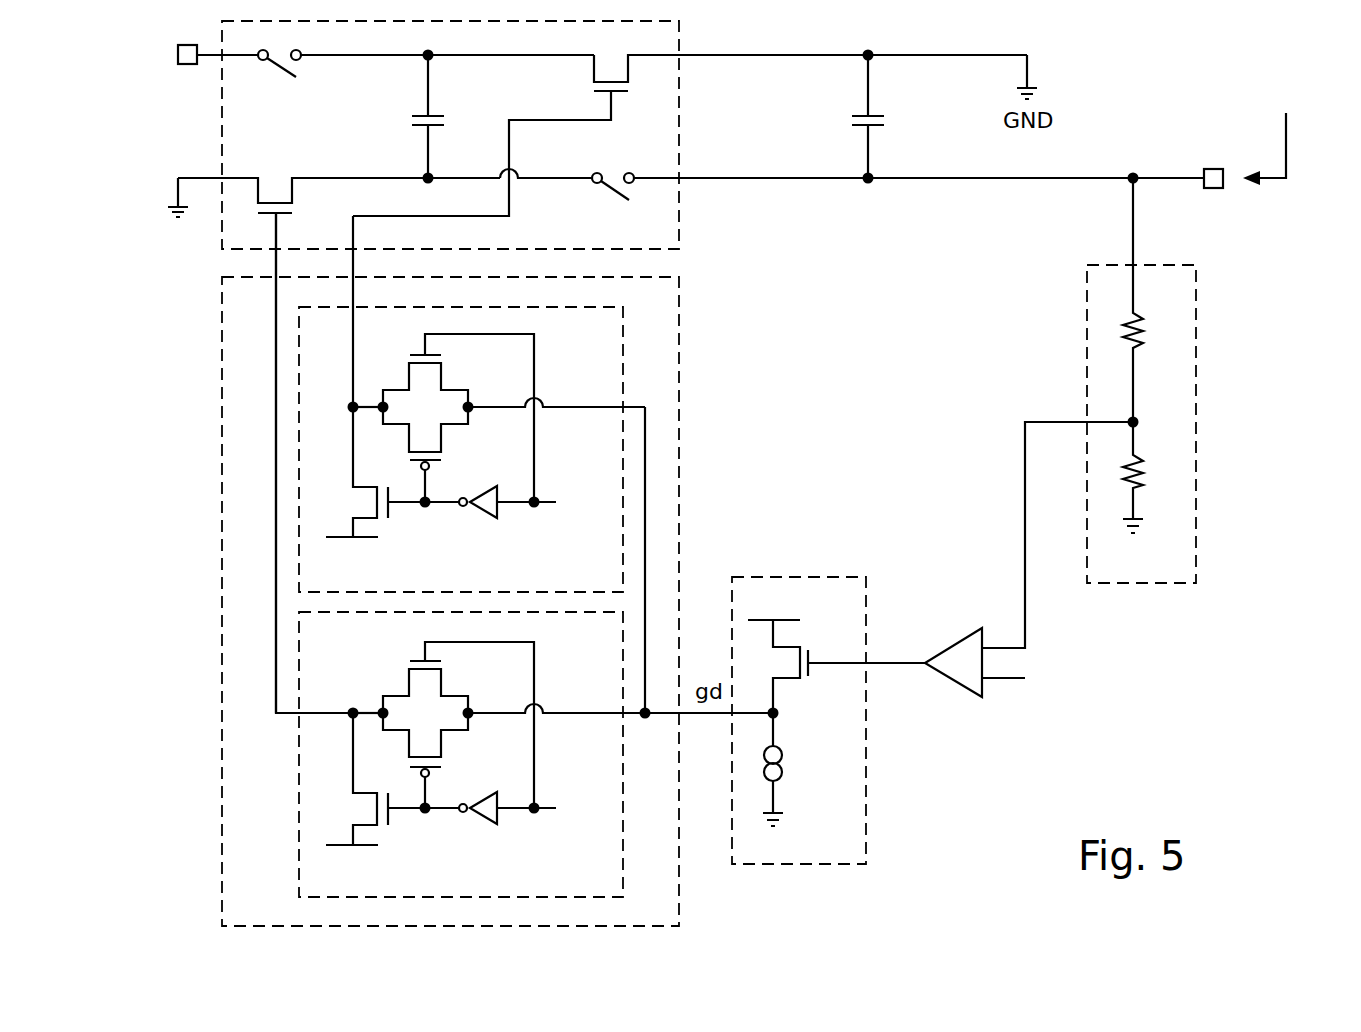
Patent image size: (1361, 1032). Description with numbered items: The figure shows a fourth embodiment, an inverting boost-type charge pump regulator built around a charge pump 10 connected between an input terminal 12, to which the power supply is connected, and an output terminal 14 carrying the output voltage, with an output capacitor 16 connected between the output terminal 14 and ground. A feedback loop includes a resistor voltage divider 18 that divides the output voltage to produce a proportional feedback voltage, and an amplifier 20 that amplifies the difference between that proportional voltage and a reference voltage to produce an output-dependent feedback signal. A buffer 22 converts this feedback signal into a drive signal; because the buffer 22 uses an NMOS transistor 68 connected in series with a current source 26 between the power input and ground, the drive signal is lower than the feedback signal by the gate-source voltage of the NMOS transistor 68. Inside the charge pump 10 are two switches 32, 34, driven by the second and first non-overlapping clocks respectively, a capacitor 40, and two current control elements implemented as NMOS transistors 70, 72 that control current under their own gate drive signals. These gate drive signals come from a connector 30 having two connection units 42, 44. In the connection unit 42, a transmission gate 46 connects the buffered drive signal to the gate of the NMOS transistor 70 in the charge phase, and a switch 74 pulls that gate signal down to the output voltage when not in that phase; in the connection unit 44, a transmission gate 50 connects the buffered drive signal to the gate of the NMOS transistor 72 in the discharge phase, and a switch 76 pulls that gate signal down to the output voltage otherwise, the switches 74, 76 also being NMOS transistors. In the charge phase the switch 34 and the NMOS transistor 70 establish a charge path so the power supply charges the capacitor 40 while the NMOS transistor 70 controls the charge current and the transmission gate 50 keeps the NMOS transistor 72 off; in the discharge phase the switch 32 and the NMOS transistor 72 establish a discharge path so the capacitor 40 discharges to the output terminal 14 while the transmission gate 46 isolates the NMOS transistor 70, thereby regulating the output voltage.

The charge pump 10 is at (680, 120).
The input terminal 12 is at (258, 60).
The output terminal 14 is at (1212, 168).
The output capacitor 16 is at (900, 126).
The resistor voltage divider 18 is at (1197, 423).
The amplifier 20 is at (952, 645).
The buffer 22 is at (800, 577).
The current source 26 is at (795, 771).
The connector 30 is at (680, 460).
The switch 32 is at (608, 192).
The switch 34 is at (276, 68).
The capacitor 40 is at (400, 107).
The connection unit 42 is at (298, 772).
The connection unit 44 is at (298, 440).
The transmission gate 46 is at (386, 679).
The transmission gate 50 is at (472, 370).
The NMOS transistor 68 is at (810, 634).
The NMOS transistor 70 is at (282, 175).
The NMOS transistor 72 is at (578, 85).
The switch 74 is at (404, 830).
The switch 76 is at (404, 525).